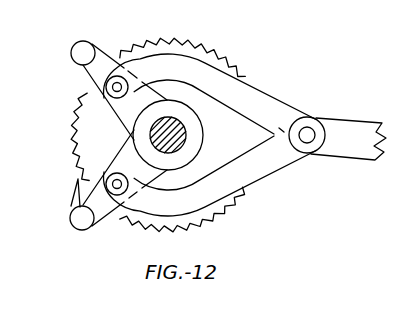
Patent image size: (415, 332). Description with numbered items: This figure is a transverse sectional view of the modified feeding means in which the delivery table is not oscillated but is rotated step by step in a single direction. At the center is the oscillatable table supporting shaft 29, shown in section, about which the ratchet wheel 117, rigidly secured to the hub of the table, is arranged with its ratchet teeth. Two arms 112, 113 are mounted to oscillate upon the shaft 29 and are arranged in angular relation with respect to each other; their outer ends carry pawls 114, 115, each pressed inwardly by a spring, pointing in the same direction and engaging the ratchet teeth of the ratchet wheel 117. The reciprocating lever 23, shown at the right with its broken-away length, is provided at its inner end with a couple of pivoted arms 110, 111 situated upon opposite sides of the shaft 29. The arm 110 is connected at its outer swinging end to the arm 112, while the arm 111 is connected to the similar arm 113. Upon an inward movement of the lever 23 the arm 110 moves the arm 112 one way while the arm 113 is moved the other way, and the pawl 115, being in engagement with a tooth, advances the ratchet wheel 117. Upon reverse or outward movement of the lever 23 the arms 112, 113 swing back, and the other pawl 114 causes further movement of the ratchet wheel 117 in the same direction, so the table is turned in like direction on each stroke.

The lever 23 is at (350, 149).
The oscillatable shaft 29 is at (182, 138).
The pivoted arm 110 is at (298, 114).
The pivoted arm 111 is at (258, 174).
The arm 112 is at (118, 114).
The arm 113 is at (117, 155).
The pawl 114 is at (99, 27).
The pawl 115 is at (72, 207).
The ratchet wheel 117 is at (228, 31).